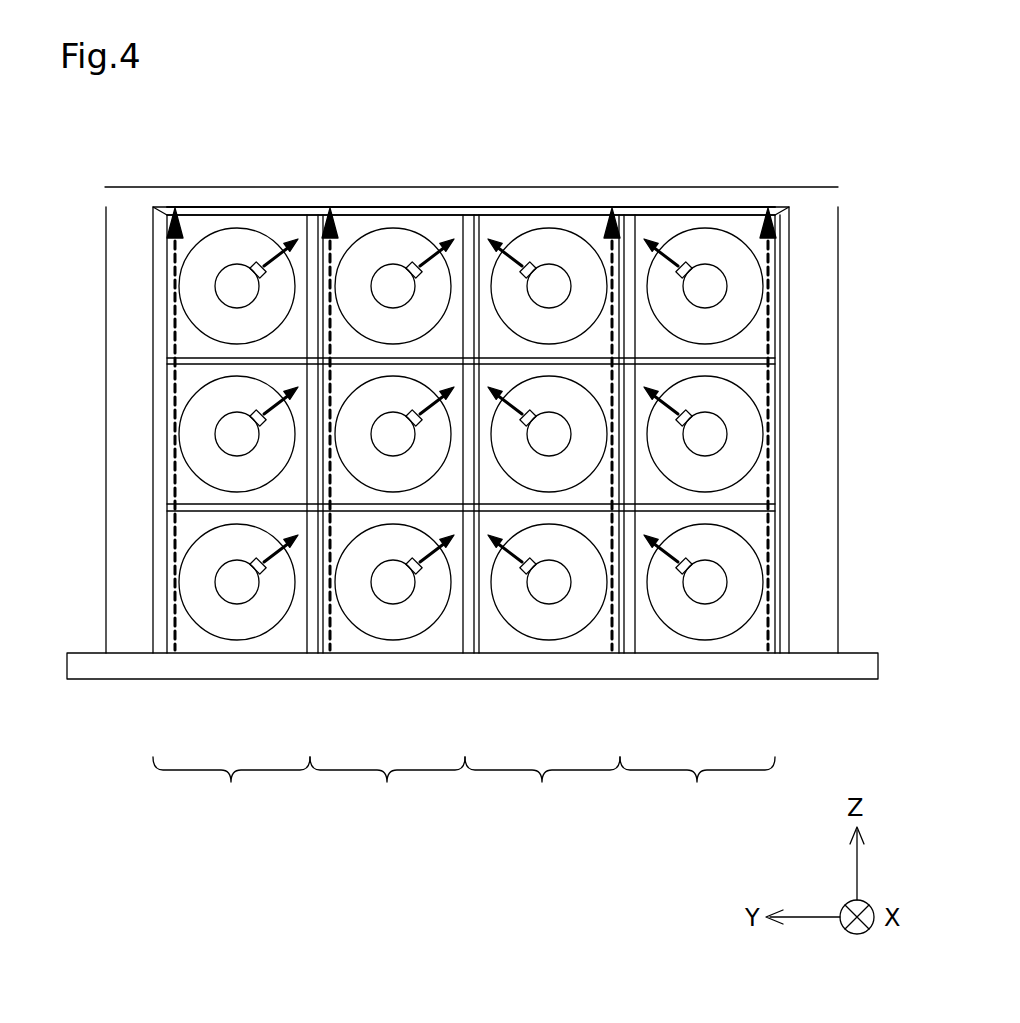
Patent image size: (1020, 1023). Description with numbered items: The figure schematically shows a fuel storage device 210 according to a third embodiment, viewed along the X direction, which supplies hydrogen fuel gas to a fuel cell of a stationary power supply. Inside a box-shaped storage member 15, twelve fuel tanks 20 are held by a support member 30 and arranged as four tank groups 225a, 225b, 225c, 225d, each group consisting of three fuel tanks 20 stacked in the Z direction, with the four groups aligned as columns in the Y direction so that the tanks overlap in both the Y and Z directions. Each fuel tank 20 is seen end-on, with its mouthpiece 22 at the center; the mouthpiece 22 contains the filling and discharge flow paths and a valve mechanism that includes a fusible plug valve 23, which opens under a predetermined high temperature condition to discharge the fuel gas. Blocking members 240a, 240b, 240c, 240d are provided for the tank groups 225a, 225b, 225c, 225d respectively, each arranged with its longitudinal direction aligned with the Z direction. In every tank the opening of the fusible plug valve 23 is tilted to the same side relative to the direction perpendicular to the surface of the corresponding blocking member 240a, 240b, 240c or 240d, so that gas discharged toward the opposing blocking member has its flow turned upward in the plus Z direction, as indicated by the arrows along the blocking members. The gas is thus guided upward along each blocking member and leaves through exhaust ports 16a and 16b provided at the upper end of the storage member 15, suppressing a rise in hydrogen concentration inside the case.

The fuel storage device 210 is at (786, 139).
The support member 30 is at (720, 213).
The storage member 15 is at (838, 297).
The exhaust port 16a is at (106, 196).
The exhaust port 16b is at (840, 197).
The fuel tank 20 is at (690, 250).
The mouthpiece 22 is at (705, 440).
The fusible plug valve 23 is at (723, 428).
The blocking member 240a is at (175, 633).
The blocking member 240b is at (330, 633).
The blocking member 240c is at (612, 633).
The blocking member 240d is at (768, 633).
The tank group 225a is at (231, 787).
The tank group 225b is at (387, 787).
The tank group 225c is at (542, 787).
The tank group 225d is at (697, 787).